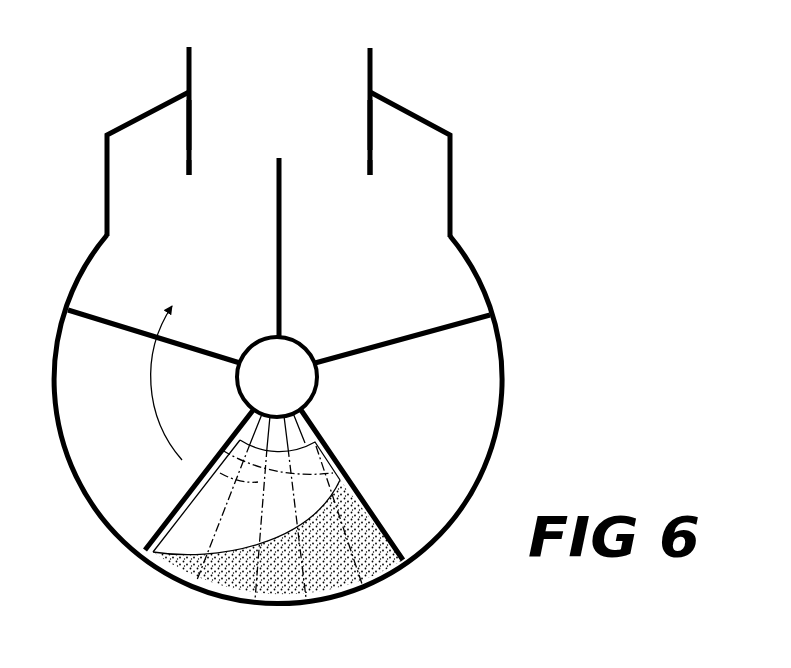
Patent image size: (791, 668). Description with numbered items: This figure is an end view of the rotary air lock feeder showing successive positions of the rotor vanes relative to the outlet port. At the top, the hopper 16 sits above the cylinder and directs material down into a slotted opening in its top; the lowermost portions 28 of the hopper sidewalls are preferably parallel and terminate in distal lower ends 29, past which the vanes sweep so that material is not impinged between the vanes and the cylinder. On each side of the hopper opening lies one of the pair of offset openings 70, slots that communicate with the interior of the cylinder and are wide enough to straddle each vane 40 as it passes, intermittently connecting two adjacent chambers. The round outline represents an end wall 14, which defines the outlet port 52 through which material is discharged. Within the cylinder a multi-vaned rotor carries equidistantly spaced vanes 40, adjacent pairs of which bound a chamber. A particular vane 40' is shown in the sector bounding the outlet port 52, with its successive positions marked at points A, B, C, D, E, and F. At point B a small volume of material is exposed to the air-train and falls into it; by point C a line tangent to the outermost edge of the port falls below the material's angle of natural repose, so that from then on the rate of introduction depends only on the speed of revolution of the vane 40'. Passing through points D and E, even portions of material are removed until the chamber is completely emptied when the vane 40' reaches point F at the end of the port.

The end wall 14 is at (480, 282).
The hopper 16 is at (187, 64).
The lowermost portion of the hopper sidewall 28 is at (191, 130).
The distal lower end 29 is at (192, 180).
The vane 40 is at (279, 287).
The particular vane 40' is at (274, 484).
The outlet port 52 is at (212, 502).
The offset opening 70 is at (140, 167).
The point A is at (410, 558).
The point B is at (363, 587).
The point C is at (307, 600).
The point D is at (253, 600).
The point E is at (192, 587).
The point F is at (140, 553).